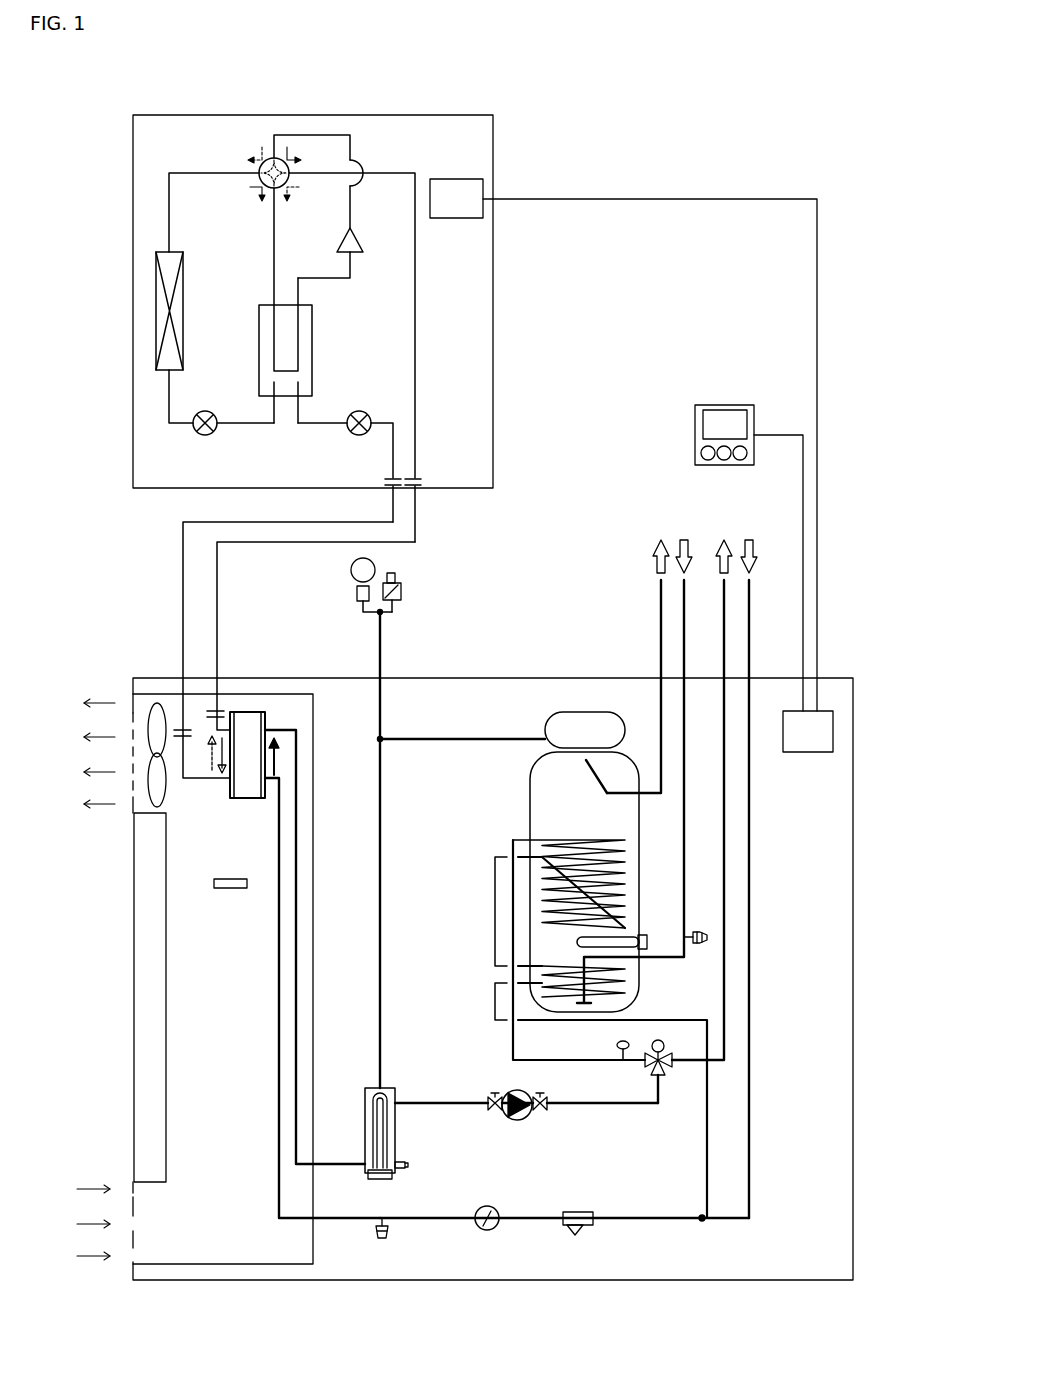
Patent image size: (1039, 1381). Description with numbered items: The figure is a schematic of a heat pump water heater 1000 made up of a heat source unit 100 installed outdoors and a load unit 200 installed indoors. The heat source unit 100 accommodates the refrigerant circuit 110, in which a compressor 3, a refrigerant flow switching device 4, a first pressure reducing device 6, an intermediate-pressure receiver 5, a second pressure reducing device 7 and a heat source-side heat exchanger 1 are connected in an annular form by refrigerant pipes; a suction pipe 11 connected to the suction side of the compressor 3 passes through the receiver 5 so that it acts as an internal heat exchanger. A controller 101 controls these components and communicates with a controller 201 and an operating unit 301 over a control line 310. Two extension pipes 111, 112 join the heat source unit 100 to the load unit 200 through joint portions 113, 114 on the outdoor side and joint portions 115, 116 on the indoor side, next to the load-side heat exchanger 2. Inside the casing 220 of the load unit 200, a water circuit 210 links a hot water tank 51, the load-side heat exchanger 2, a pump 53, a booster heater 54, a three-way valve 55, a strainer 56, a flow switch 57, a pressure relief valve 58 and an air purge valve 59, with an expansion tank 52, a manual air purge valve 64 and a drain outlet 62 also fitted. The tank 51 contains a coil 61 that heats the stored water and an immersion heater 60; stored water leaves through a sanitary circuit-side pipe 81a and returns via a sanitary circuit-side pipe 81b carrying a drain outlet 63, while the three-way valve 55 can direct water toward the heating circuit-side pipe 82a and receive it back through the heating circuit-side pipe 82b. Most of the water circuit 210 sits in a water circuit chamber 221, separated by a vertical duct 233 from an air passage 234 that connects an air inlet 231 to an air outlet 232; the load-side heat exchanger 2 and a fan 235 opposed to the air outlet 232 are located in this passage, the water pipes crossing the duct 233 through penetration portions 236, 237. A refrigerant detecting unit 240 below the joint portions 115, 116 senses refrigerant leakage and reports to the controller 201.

The heat pump water heater 1000 is at (666, 155).
The heat source unit 100 is at (493, 133).
The controller 101 is at (483, 212).
The refrigerant circuit 110 is at (415, 333).
The extension pipe 111 is at (217, 570).
The extension pipe 112 is at (183, 598).
The joint portion 113 is at (416, 490).
The joint portion 114 is at (390, 490).
The joint portion 115 is at (217, 706).
The joint portion 116 is at (183, 726).
The heat source-side heat exchanger 1 is at (183, 284).
The load-side heat exchanger 2 is at (250, 712).
The compressor 3 is at (363, 241).
The refrigerant flow switching device 4 is at (268, 202).
The intermediate-pressure receiver 5 is at (259, 338).
The first pressure reducing device 6 is at (359, 435).
The second pressure reducing device 7 is at (205, 435).
The suction pipe 11 is at (291, 372).
The load unit 200 is at (551, 625).
The controller 201 is at (803, 752).
The water circuit 210 is at (657, 1220).
The casing 220 is at (527, 678).
The water circuit chamber 221 is at (453, 712).
The air inlet 231 is at (113, 1176).
The air outlet 232 is at (128, 678).
The duct 233 is at (164, 958).
The air passage 234 is at (216, 1017).
The fan 235 is at (155, 808).
The penetration portion 236 is at (310, 1165).
The penetration portion 237 is at (310, 1220).
The refrigerant detecting unit 240 is at (214, 884).
The operating unit 301 is at (725, 405).
The control line 310 is at (817, 290).
The hot water tank 51 is at (530, 805).
The expansion tank 52 is at (545, 724).
The pump 53 is at (519, 1120).
The booster heater 54 is at (395, 1130).
The three-way valve 55 is at (661, 1077).
The strainer 56 is at (572, 1235).
The flow switch 57 is at (487, 1230).
The pressure relief valve 58 is at (357, 595).
The air purge valve 59 is at (401, 588).
The immersion heater 60 is at (647, 941).
The coil 61 is at (623, 872).
The drain outlet 62 is at (375, 1236).
The drain outlet 63 is at (707, 937).
The manual air purge valve 64 is at (617, 1044).
The sanitary circuit-side pipe (supply pipe) 81a is at (658, 630).
The sanitary circuit-side pipe (return pipe) 81b is at (684, 597).
The heating circuit-side pipe (supply pipe) 82a is at (724, 630).
The heating circuit-side pipe (return pipe) 82b is at (749, 597).